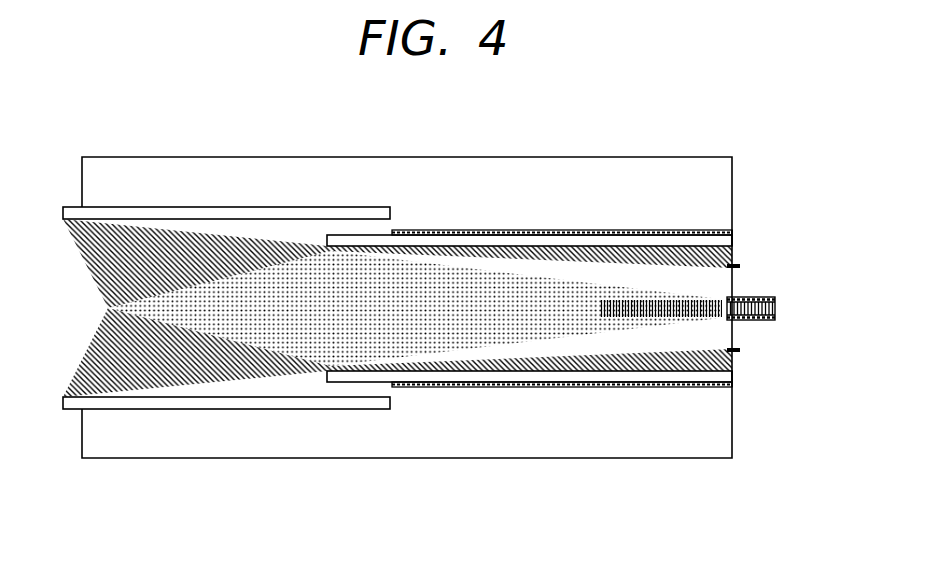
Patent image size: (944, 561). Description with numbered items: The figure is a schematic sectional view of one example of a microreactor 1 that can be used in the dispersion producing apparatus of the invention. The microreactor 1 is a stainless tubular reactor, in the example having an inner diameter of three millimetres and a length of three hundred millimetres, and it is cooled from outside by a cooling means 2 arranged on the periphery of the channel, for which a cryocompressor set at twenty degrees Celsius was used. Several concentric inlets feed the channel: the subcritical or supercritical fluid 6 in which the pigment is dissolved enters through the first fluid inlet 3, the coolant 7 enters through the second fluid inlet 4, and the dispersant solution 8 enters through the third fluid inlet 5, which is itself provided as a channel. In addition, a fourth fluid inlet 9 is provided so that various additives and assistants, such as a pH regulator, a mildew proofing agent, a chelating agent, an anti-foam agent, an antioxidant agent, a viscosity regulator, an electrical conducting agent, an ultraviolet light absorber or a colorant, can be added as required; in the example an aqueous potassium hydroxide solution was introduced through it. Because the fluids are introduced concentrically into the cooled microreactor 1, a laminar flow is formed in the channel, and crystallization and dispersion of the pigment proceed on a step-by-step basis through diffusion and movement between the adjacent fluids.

The microreactor 1 is at (282, 206).
The cooling means 2 is at (173, 177).
The first fluid inlet 3 is at (777, 308).
The second fluid inlet 4 is at (733, 282).
The third fluid inlet 5 is at (733, 255).
The subcritical or supercritical fluid 6 is at (713, 300).
The coolant 7 is at (700, 283).
The dispersant solution 8 is at (655, 248).
The fourth fluid inlet 9 is at (400, 225).